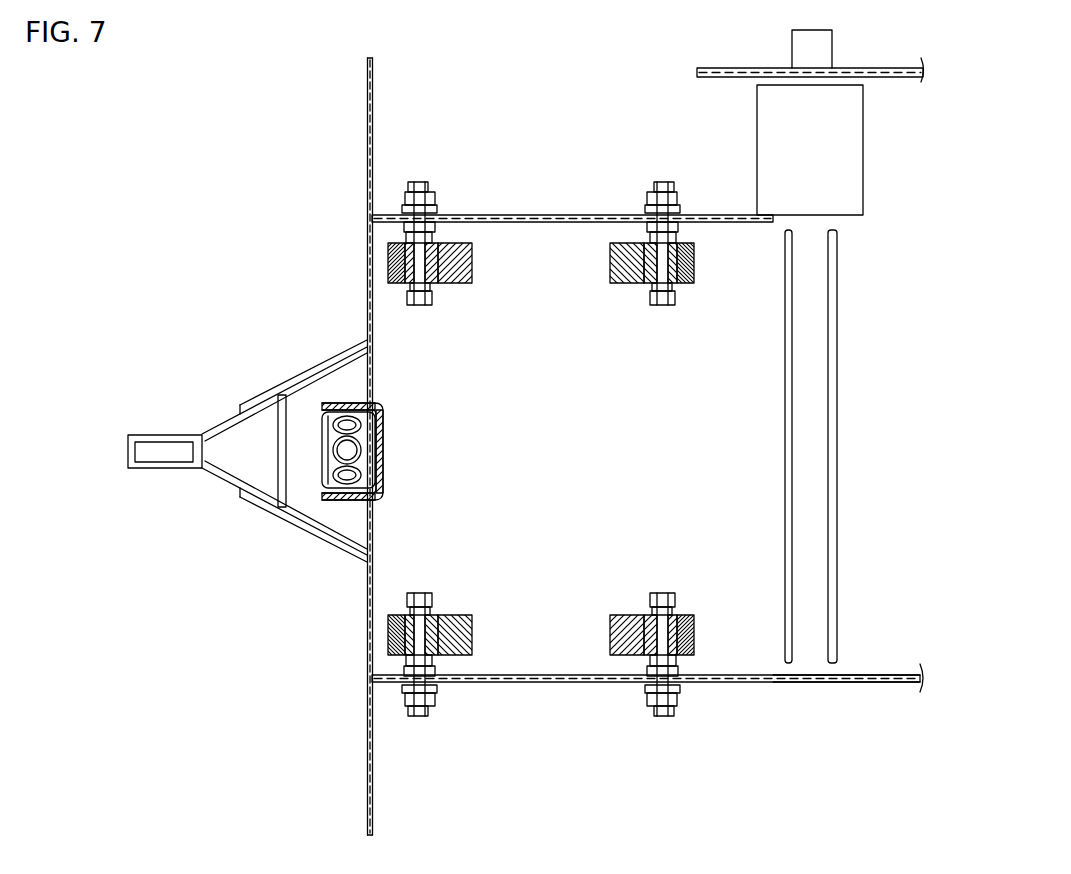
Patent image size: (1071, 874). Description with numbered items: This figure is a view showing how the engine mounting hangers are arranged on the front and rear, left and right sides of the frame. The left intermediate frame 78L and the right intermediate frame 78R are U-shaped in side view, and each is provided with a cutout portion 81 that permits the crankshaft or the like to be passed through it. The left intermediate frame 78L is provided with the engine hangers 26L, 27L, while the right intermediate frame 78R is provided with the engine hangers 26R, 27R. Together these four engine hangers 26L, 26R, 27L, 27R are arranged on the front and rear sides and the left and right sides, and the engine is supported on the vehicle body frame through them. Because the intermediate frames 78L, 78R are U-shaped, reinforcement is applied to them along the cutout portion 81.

The cutout portion 81 is at (600, 215).
The right intermediate frame 78R is at (703, 215).
The left intermediate frame 78L is at (713, 682).
The engine hanger 26R is at (432, 288).
The engine hanger 27R is at (647, 290).
The engine hanger 26L is at (438, 612).
The engine hanger 27L is at (650, 615).